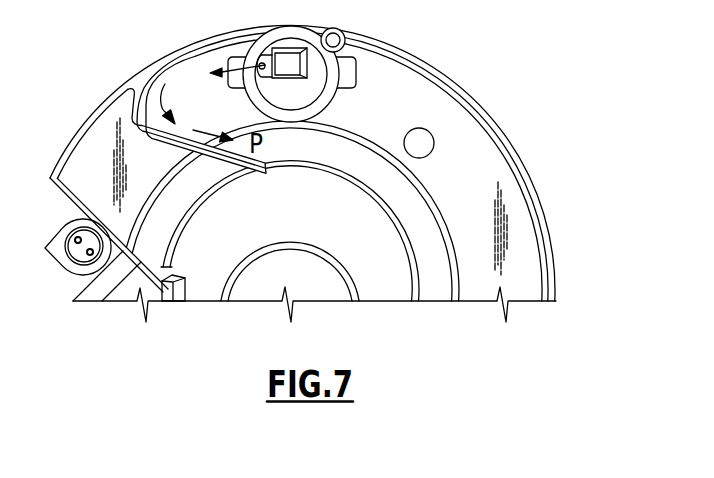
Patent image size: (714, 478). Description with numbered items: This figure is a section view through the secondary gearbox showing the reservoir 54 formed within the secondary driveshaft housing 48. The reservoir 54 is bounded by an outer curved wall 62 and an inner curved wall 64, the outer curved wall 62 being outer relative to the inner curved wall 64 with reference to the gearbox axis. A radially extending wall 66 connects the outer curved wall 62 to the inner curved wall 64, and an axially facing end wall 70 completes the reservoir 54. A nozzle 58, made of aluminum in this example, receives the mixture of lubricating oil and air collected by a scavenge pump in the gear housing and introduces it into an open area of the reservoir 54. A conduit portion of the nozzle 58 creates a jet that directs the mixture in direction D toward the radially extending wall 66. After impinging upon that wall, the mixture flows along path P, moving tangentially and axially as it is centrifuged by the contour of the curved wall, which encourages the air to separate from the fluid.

The secondary driveshaft housing 48 is at (517, 144).
The reservoir 54 is at (470, 253).
The nozzle 58 is at (316, 78).
The outer curved wall 62 is at (537, 185).
The inner curved wall 64 is at (377, 190).
The radially extending wall 66 is at (158, 85).
The axially facing end wall 70 is at (413, 100).